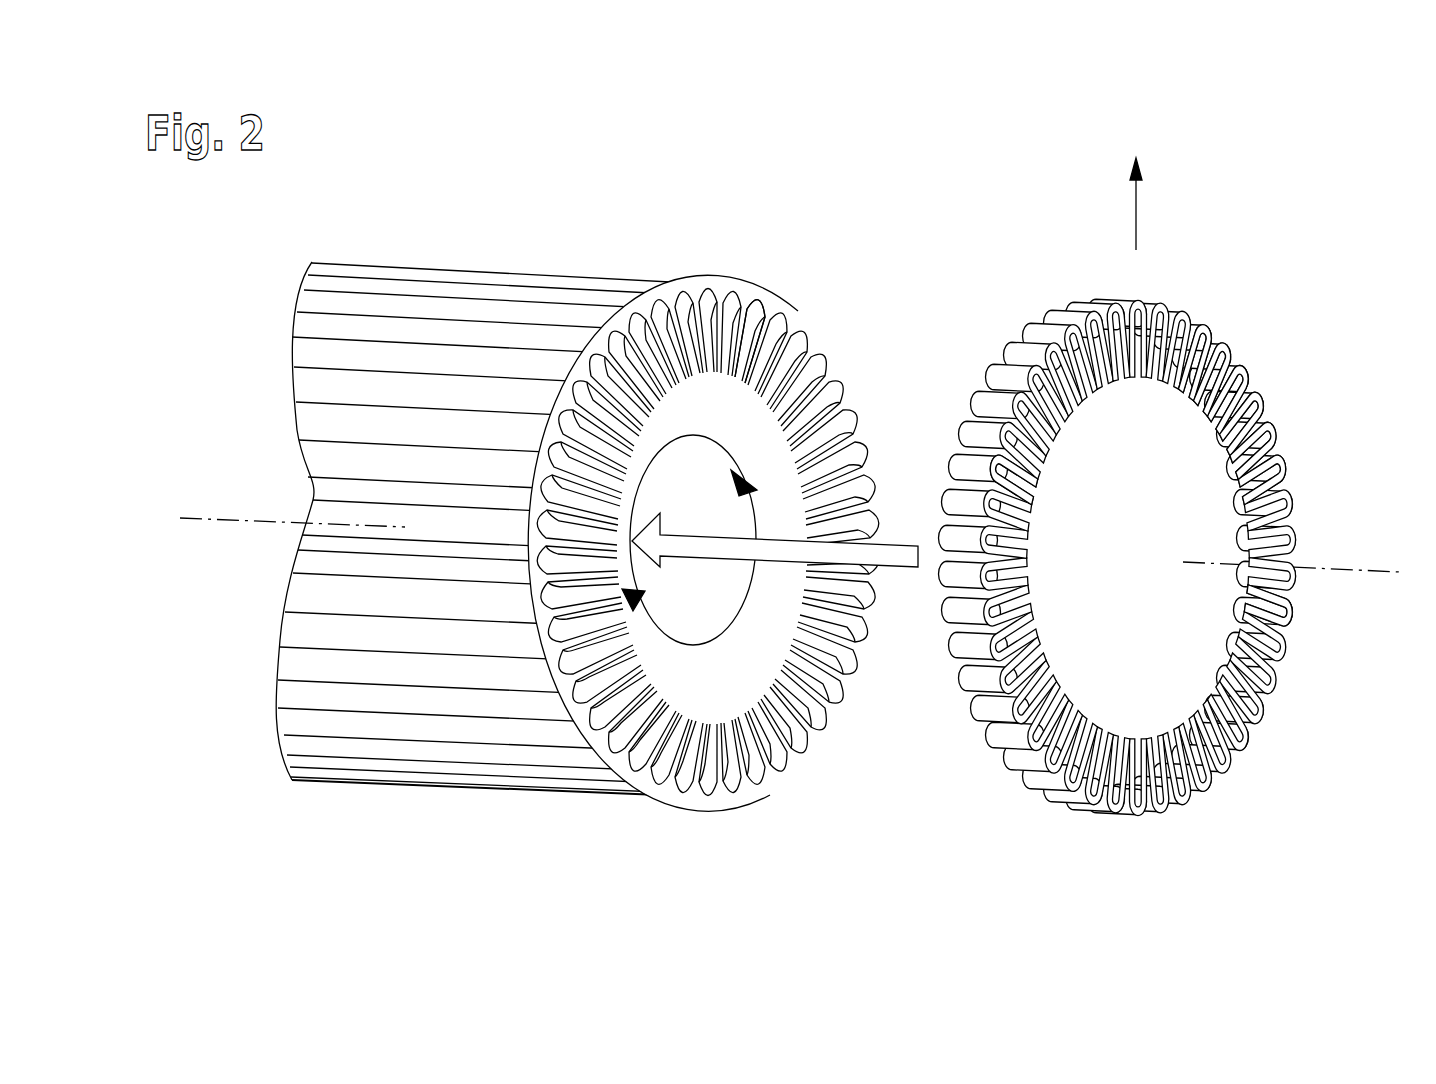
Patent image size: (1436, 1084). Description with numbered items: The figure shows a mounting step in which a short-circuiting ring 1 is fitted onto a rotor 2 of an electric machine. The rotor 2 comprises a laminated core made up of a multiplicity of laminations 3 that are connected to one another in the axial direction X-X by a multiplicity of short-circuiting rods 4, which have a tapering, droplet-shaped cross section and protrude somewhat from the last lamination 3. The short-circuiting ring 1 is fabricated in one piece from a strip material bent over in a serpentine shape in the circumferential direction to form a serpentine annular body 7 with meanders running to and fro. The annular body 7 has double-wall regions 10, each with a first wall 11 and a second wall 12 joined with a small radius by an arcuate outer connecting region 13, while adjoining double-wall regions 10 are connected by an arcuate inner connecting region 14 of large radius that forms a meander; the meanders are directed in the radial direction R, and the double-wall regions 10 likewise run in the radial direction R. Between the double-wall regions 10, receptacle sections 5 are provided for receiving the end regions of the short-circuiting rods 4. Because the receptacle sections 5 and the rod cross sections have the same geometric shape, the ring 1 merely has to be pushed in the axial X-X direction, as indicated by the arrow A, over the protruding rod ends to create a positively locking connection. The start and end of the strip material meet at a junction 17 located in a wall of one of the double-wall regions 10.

The short-circuiting ring 1 is at (1304, 275).
The rotor 2 is at (247, 309).
The lamination 3 is at (707, 393).
The short-circuiting rod 4 is at (818, 318).
The receptacle section 5 is at (1287, 602).
The serpentine annular body 7 is at (1208, 322).
The double-wall region 10 is at (1259, 450).
The first wall 11 is at (1258, 433).
The second wall 12 is at (1283, 442).
The outer connecting region 13 is at (1247, 362).
The inner connecting region 14 is at (1180, 428).
The junction 17 is at (994, 466).
The arrow A is at (727, 556).
The radial direction R is at (1136, 215).
The axial direction X is at (791, 571).